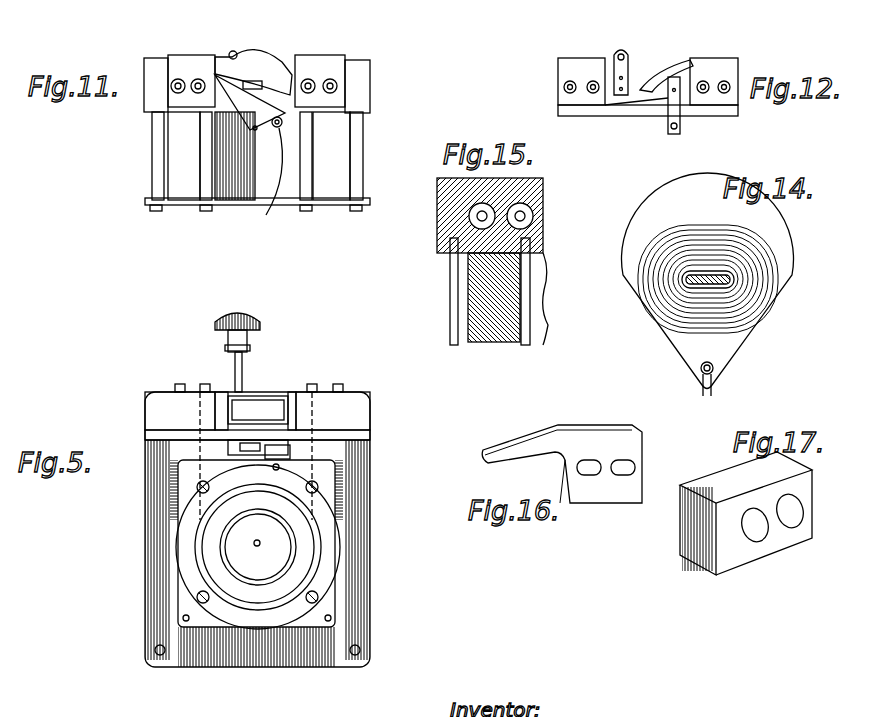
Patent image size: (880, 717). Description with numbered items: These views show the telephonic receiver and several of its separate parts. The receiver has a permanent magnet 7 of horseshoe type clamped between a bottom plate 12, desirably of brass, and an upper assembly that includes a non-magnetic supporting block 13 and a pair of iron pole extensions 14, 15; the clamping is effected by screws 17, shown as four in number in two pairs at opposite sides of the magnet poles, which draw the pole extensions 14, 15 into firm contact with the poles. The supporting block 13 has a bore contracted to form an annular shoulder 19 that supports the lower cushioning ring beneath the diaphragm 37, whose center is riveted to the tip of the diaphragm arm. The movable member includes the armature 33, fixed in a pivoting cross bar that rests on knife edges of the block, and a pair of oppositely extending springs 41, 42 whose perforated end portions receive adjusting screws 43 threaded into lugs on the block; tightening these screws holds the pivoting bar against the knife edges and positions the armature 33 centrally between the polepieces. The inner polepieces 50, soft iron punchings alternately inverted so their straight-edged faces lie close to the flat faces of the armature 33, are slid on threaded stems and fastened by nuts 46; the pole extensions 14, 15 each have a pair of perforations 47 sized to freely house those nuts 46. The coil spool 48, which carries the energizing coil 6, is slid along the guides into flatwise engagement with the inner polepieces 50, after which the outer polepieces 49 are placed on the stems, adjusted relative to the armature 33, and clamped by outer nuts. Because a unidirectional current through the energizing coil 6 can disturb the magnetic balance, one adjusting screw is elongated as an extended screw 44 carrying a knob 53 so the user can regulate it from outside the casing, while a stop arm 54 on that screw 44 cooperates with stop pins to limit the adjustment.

In FIG. 14, the energizing coil 6 is at (688, 232).
In FIG. 11, the permanent magnet 7 is at (182, 172).
In FIG. 15, the permanent magnet 7 is at (495, 335).
In FIG. 5, the permanent magnet 7 is at (345, 497).
In FIG. 5, the bottom plate 12 is at (160, 560).
In FIG. 5, the supporting block 13 is at (328, 607).
In FIG. 11, the pole extension 14 is at (145, 95).
In FIG. 15, the pole extension 14 is at (540, 178).
In FIG. 17, the pole extension 14 is at (692, 545).
In FIG. 5, the pole extension 14 is at (358, 418).
In FIG. 11, the pole extension 15 is at (365, 98).
In FIG. 5, the pole extension 15 is at (150, 412).
In FIG. 11, the screws 17 is at (158, 150).
In FIG. 15, the screws 17 is at (452, 294).
In FIG. 5, the annular shoulder 19 is at (332, 557).
In FIG. 12, the armature 33 is at (650, 78).
In FIG. 14, the armature 33 is at (736, 280).
In FIG. 5, the diaphragm 37 is at (262, 556).
In FIG. 12, the spring 41 is at (628, 54).
In FIG. 12, the spring 42 is at (682, 130).
In FIG. 11, the adjusting screws 43 is at (238, 44).
In FIG. 11, the extended screw 44 is at (266, 215).
In FIG. 5, the extended screw 44 is at (243, 376).
In FIG. 12, the nuts 46 is at (708, 80).
In FIG. 15, the nuts 46 is at (532, 216).
In FIG. 17, the perforations 47 is at (790, 528).
In FIG. 14, the coil spool 48 is at (742, 362).
In FIG. 5, the outer polepieces 49 is at (292, 400).
In FIG. 16, the inner polepieces 50 is at (600, 440).
In FIG. 5, the inner polepieces 50 is at (340, 436).
In FIG. 5, the knob 53 is at (260, 318).
In FIG. 5, the stop arm 54 is at (226, 348).